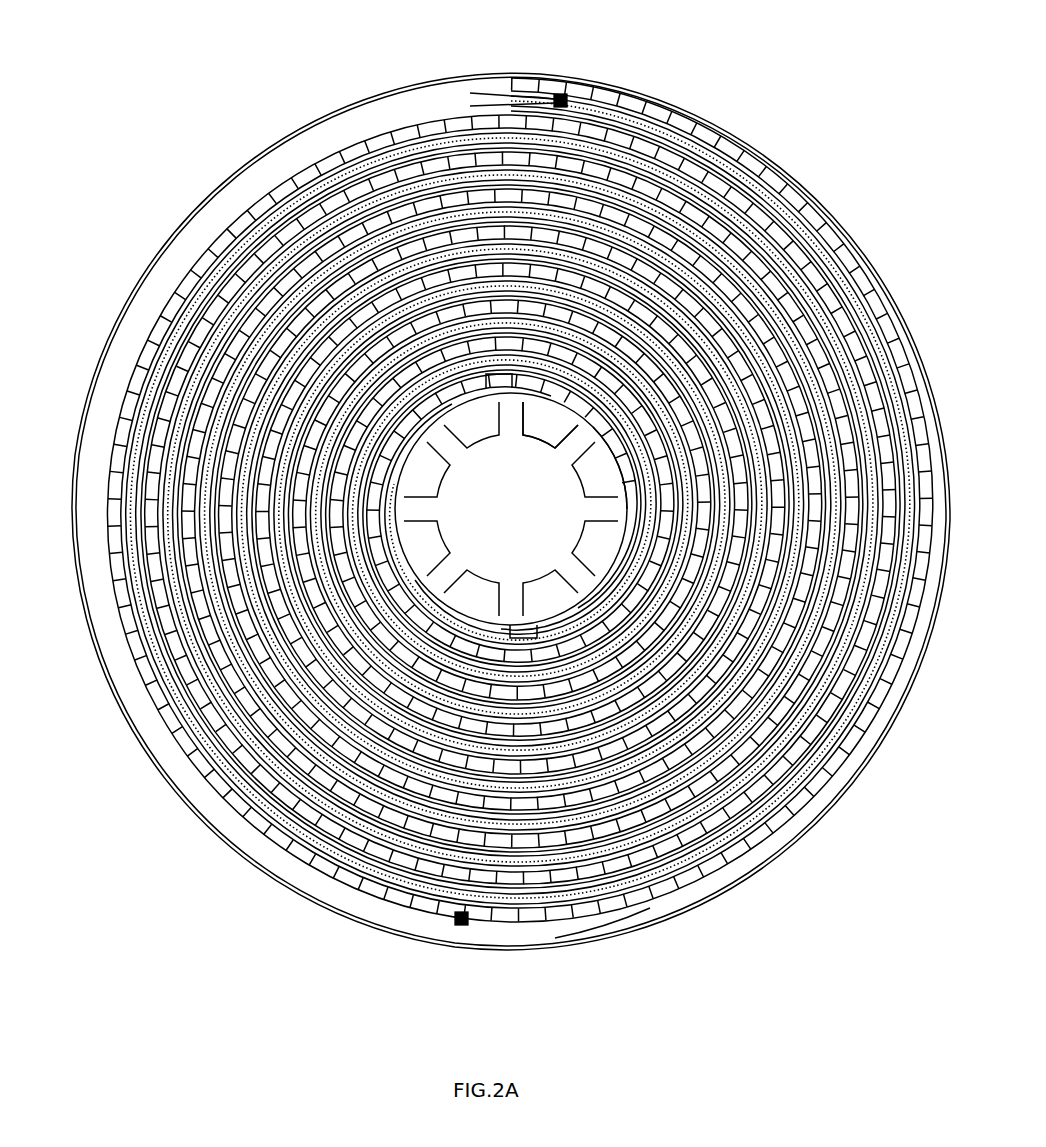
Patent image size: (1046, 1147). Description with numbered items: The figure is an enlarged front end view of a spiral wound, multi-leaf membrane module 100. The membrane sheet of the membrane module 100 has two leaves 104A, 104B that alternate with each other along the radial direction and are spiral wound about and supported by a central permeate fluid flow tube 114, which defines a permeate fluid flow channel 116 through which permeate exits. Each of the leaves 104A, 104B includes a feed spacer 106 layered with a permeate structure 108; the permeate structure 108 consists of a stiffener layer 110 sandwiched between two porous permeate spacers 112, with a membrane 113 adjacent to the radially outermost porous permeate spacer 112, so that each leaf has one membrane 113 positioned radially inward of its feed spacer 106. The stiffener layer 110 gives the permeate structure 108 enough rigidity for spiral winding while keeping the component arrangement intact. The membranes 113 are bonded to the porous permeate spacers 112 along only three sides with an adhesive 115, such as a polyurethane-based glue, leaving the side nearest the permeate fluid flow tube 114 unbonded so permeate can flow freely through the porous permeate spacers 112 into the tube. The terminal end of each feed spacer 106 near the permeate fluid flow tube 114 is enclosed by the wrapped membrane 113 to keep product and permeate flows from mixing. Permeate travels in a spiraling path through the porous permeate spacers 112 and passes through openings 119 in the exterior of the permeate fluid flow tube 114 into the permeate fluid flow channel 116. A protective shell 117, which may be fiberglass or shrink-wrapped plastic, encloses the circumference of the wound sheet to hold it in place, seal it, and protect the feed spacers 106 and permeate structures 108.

The membrane module 100 is at (850, 184).
The leaf 104A is at (418, 470).
The leaf 104B is at (633, 552).
The feed spacer 106 is at (918, 352).
The permeate structure 108 is at (505, 84).
The stiffener layer 110 is at (740, 170).
The porous permeate spacer 112 is at (692, 150).
The membrane 113 is at (648, 130).
The permeate fluid flow tube 114 is at (600, 478).
The adhesive 115 is at (560, 94).
The permeate fluid flow channel 116 is at (491, 537).
The protective shell 117 is at (598, 926).
The openings 119 is at (577, 443).